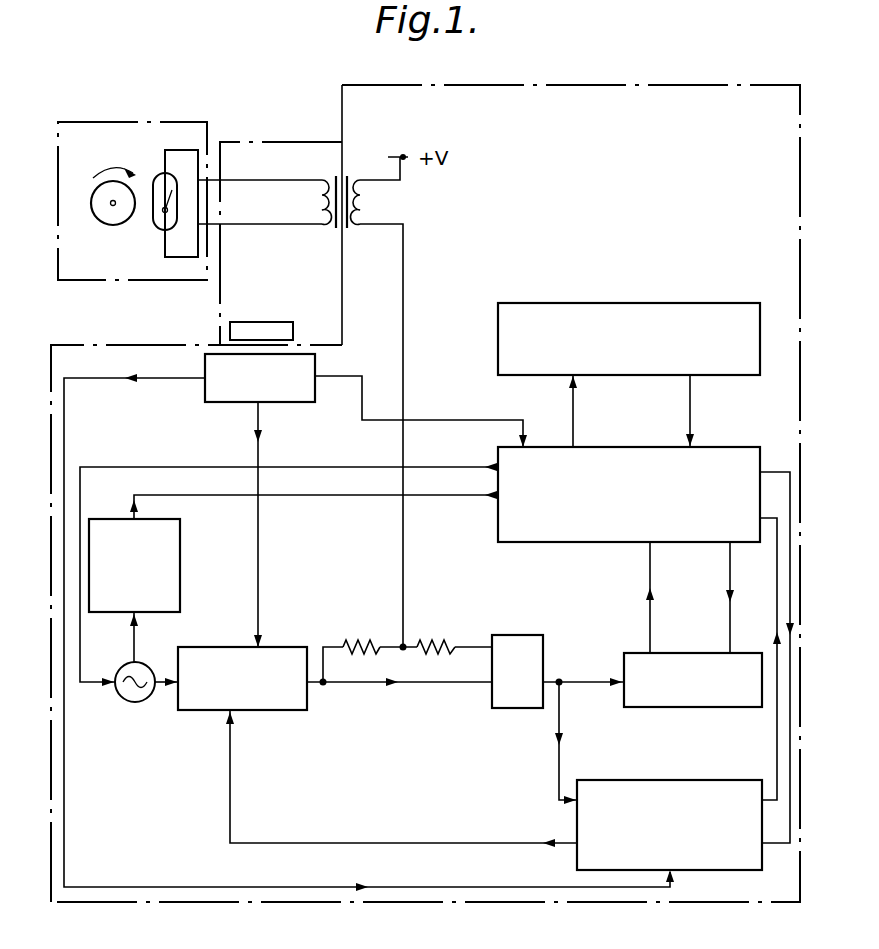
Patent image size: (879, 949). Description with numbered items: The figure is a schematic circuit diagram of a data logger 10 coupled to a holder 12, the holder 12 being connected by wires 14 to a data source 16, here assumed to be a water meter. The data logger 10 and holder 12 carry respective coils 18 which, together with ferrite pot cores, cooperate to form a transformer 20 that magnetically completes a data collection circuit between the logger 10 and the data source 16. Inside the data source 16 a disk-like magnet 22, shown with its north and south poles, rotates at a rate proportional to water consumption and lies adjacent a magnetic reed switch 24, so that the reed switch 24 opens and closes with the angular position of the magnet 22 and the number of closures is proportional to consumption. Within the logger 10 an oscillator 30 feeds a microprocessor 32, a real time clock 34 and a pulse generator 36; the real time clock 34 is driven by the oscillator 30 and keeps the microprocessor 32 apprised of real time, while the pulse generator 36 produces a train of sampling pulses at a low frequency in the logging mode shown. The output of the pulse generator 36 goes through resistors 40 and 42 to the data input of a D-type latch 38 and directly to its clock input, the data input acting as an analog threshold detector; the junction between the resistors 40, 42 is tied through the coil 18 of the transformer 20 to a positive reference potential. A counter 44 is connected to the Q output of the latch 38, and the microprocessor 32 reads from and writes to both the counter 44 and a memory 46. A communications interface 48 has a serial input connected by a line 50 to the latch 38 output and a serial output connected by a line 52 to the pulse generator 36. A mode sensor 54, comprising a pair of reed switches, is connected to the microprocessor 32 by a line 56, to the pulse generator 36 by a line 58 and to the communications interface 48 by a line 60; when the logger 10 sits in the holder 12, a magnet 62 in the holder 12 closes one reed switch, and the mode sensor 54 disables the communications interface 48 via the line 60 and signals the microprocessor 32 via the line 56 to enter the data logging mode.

The data logger 10 is at (530, 84).
The holder 12 is at (240, 141).
The wires 14 is at (213, 182).
The data source 16 is at (130, 121).
The coils 18 is at (318, 207).
The transformer 20 is at (356, 170).
The magnet 22 is at (103, 222).
The magnetic reed switch 24 is at (156, 228).
The oscillator 30 is at (133, 703).
The microprocessor 32 is at (627, 446).
The real time clock 34 is at (182, 540).
The pulse generator 36 is at (262, 712).
The D-type flip-flop or latch 38 is at (528, 634).
The resistor 40 is at (355, 640).
The resistor 42 is at (433, 640).
The counter 44 is at (708, 708).
The memory 46 is at (623, 302).
The communications interface 48 is at (688, 779).
The line 50 is at (562, 730).
The line 52 is at (343, 843).
The mode sensor 54 is at (203, 397).
The line 56 is at (495, 418).
The line 58 is at (255, 452).
The line 60 is at (405, 887).
The magnet 62 is at (252, 330).